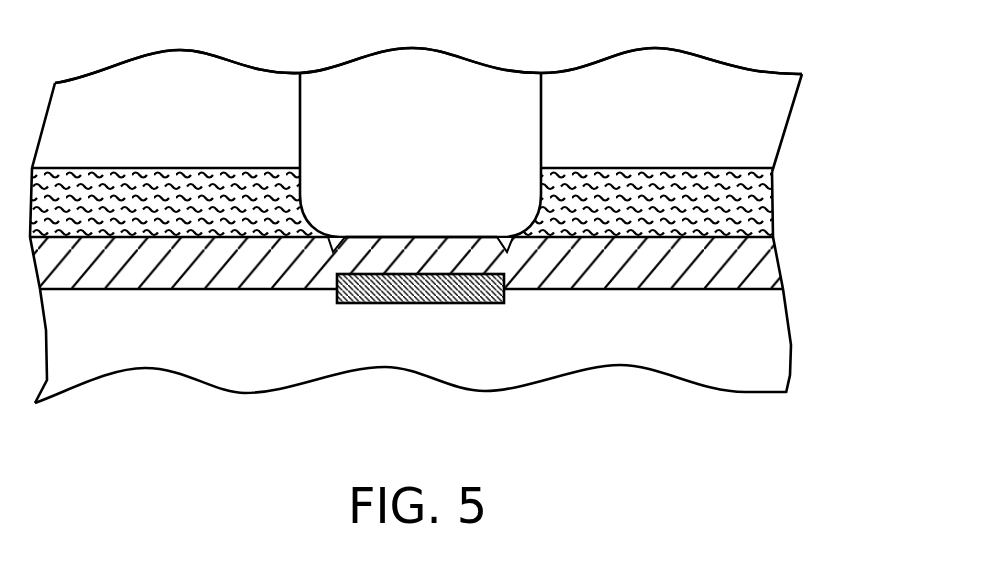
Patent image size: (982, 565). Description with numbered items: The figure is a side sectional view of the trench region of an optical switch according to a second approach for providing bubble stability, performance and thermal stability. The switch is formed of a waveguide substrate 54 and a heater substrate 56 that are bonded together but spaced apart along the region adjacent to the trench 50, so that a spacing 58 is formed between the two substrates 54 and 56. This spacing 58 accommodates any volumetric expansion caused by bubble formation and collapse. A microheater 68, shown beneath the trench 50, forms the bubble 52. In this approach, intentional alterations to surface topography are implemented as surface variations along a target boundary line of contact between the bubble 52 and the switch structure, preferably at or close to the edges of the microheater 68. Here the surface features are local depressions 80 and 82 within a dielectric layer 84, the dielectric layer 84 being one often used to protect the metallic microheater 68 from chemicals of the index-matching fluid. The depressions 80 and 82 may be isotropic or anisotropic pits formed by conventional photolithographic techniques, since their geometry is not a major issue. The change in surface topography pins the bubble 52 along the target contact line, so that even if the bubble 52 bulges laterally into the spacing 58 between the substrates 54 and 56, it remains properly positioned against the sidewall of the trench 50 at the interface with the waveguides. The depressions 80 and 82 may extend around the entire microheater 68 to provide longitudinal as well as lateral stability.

The trench 50 is at (543, 92).
The bubble 52 is at (437, 166).
The waveguide substrate 54 is at (784, 100).
The heater substrate 56 is at (777, 357).
The spacing 58 is at (774, 198).
The microheater 68 is at (470, 303).
The local depression 80 is at (333, 252).
The local depression 82 is at (507, 252).
The dielectric layer 84 is at (770, 270).